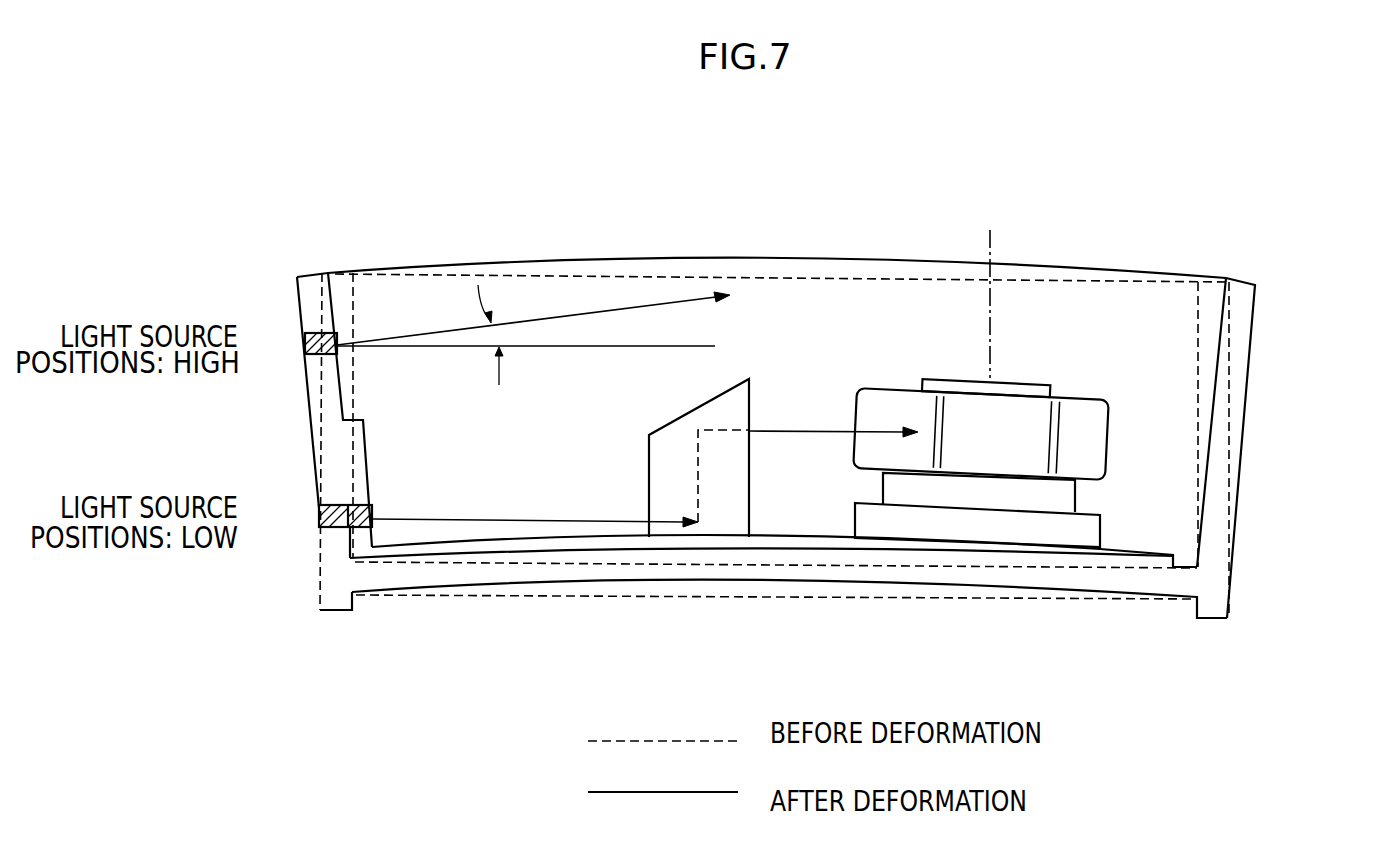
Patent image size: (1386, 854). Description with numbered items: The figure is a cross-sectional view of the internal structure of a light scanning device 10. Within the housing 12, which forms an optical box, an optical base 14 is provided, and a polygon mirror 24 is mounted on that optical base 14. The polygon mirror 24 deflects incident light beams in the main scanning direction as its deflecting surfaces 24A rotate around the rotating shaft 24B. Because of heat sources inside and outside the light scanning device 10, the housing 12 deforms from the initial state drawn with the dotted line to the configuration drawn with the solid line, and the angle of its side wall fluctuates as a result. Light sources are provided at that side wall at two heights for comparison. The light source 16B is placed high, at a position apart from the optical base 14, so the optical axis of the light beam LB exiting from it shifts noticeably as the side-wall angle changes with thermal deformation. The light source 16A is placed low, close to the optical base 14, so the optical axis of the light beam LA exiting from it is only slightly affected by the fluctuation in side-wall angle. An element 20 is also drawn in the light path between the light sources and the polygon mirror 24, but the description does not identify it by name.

The light scanning device 10 is at (1212, 231).
The housing 12 is at (1253, 307).
The optical base 14 is at (1115, 547).
The light source 16A is at (320, 517).
The light source 16B is at (305, 343).
The reflector 20 is at (665, 476).
The polygon mirror 24 is at (1039, 364).
The deflecting surfaces 24A is at (1085, 433).
The rotating shaft 24B is at (992, 255).
The light beam LA is at (487, 522).
The light beam LB is at (647, 305).